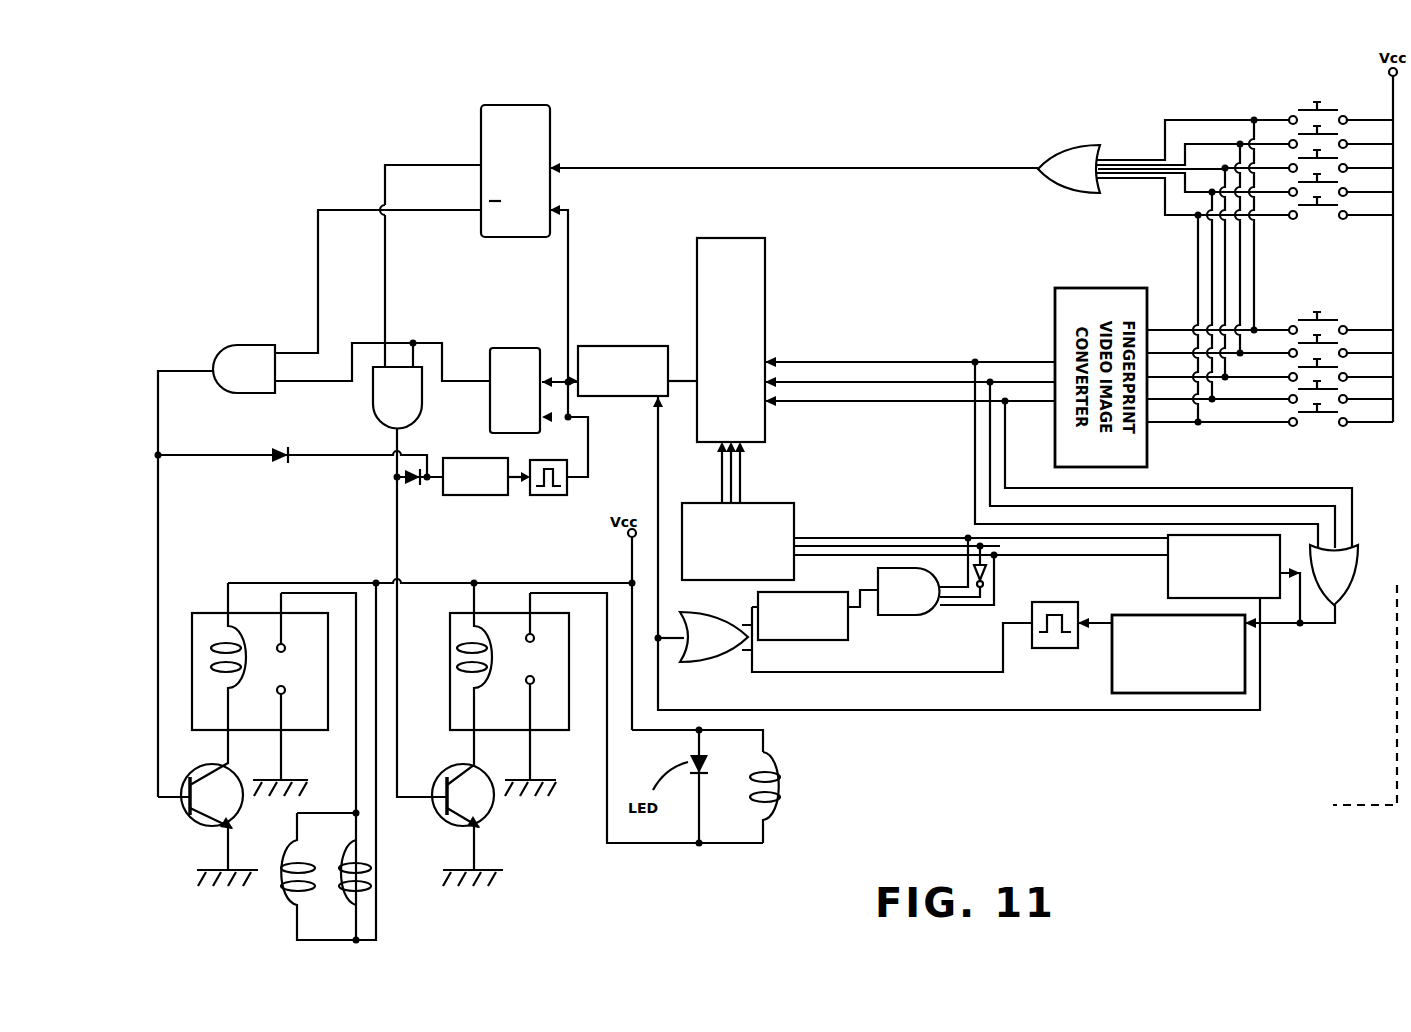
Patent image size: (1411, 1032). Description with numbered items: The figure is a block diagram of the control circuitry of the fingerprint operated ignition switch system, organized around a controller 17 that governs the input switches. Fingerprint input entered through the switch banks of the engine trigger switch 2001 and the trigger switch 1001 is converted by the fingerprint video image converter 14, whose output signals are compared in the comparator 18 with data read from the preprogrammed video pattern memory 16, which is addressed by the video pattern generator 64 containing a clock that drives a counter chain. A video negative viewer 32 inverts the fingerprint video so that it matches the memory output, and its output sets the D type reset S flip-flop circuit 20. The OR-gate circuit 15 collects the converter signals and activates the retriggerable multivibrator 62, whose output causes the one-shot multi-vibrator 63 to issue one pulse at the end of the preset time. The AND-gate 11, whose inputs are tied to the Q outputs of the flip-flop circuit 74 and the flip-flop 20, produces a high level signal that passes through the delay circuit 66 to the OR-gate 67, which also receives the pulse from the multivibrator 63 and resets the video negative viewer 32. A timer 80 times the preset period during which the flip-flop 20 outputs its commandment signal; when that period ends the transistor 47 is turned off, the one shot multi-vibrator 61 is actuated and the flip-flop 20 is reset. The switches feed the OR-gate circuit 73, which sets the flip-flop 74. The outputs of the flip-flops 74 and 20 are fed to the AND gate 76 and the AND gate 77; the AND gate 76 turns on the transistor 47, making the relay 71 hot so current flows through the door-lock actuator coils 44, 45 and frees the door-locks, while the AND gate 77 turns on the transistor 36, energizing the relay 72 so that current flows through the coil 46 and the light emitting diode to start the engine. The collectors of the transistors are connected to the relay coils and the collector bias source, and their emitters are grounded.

The AND-gate 11 is at (921, 615).
The fingerprint video image converter 14 is at (1055, 330).
The OR-gate circuit 15 is at (1356, 578).
The preprogrammed video pattern memory 16 is at (790, 503).
The controller 17 is at (1366, 812).
The comparator 18 is at (765, 273).
The D type reset S flip-flop circuit 20 is at (513, 348).
The video negative viewer 32 is at (625, 346).
The transistor 36 is at (442, 812).
The coil 44 is at (277, 898).
The coil 45 is at (376, 882).
The coil 46 is at (780, 786).
The transistor 47 is at (189, 808).
The one shot multi-vibrator 61 is at (567, 493).
The retriggerable multivibrator 62 is at (1112, 666).
The one-shot multi-vibrator 63 is at (1062, 602).
The video pattern generator 64 is at (1168, 568).
The delay circuit 66 is at (758, 601).
The OR-gate 67 is at (712, 662).
The relay 71 is at (193, 613).
The relay 72 is at (572, 700).
The OR-gate circuit 73 is at (1042, 196).
The flip-flop circuit 74 is at (550, 122).
The AND gate 76 is at (253, 345).
The AND gate 77 is at (378, 427).
The timer 80 is at (478, 497).
The trigger switch 1001 is at (1270, 354).
The engine trigger switch 2001 is at (1293, 251).